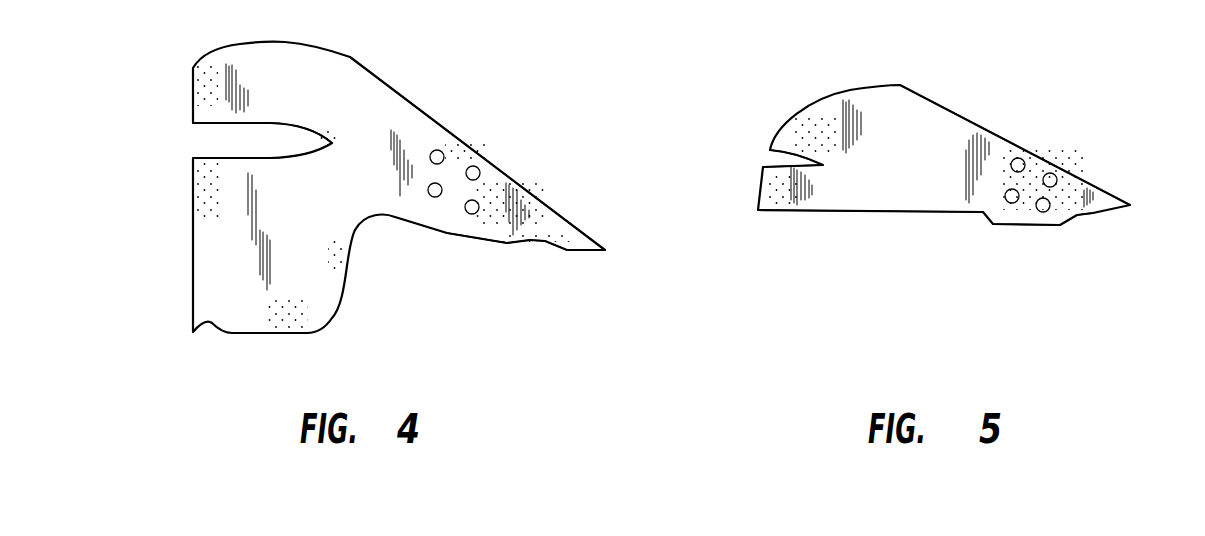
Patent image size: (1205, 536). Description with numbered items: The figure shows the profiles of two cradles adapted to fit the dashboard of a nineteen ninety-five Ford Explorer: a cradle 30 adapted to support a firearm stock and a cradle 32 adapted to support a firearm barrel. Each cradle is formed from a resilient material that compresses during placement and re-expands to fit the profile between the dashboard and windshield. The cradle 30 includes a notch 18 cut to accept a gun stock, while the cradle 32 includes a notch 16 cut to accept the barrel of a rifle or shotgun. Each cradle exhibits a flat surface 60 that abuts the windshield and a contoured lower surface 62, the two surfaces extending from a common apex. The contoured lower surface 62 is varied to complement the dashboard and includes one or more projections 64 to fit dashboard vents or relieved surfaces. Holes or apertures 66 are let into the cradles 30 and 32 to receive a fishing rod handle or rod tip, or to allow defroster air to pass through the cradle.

In FIG. 5, the notch 16 is at (775, 162).
In FIG. 4, the notch 18 is at (193, 158).
In FIG. 4, the cradle 30 is at (462, 126).
In FIG. 5, the cradle 32 is at (1003, 123).
In FIG. 4, the flat surface 60 is at (502, 168).
In FIG. 5, the flat surface 60 is at (1052, 162).
In FIG. 4, the contoured lower surface 62 is at (395, 217).
In FIG. 5, the contoured lower surface 62 is at (843, 212).
In FIG. 4, the projections 64 is at (507, 243).
In FIG. 5, the projections 64 is at (1057, 225).
In FIG. 4, the holes or apertures 66 is at (470, 214).
In FIG. 5, the holes or apertures 66 is at (1040, 210).